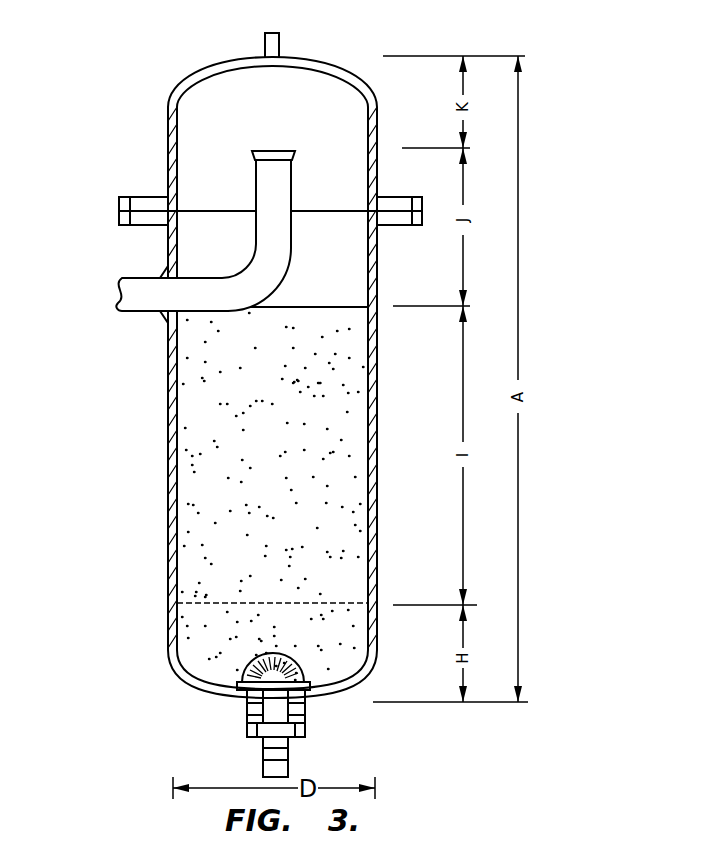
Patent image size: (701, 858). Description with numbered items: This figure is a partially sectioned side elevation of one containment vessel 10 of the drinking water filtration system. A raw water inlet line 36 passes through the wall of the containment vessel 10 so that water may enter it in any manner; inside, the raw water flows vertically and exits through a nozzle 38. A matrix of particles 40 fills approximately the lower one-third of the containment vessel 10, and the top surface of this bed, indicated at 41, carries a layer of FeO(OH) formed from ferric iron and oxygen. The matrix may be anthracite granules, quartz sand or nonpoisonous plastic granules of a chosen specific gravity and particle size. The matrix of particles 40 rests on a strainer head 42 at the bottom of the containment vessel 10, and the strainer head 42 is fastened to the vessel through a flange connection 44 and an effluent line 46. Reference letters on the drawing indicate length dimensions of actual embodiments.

The containment vessel 10 is at (327, 92).
The raw water inlet line 36 is at (145, 316).
The nozzle 38 is at (276, 150).
The matrix of particles 40 is at (222, 457).
The upper level of bed 41 is at (352, 305).
The strainer head 42 is at (270, 654).
The flange connection 44 is at (236, 740).
The effluent line 46 is at (263, 753).